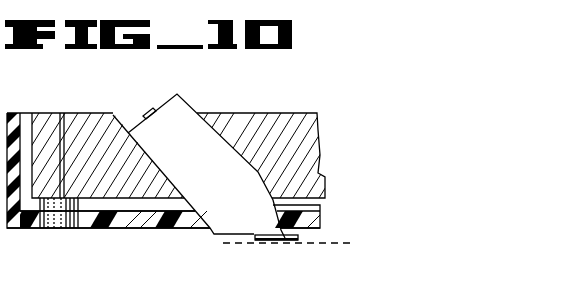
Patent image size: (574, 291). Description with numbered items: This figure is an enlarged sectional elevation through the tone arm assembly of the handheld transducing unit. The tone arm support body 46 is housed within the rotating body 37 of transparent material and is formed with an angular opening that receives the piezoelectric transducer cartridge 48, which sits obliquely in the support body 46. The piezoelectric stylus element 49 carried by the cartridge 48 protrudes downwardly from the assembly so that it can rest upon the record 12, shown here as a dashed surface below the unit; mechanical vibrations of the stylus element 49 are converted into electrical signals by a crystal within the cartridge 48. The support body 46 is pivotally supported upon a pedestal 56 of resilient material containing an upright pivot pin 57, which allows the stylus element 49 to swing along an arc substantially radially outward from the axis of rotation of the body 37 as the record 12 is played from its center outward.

The record 12 is at (328, 228).
The rotating body 37 is at (107, 229).
The support body 46 is at (87, 113).
The piezoelectric transducer cartridge 48 is at (190, 104).
The piezoelectric stylus element 49 is at (283, 242).
The pedestal 56 is at (57, 228).
The pivot pin 57 is at (61, 134).